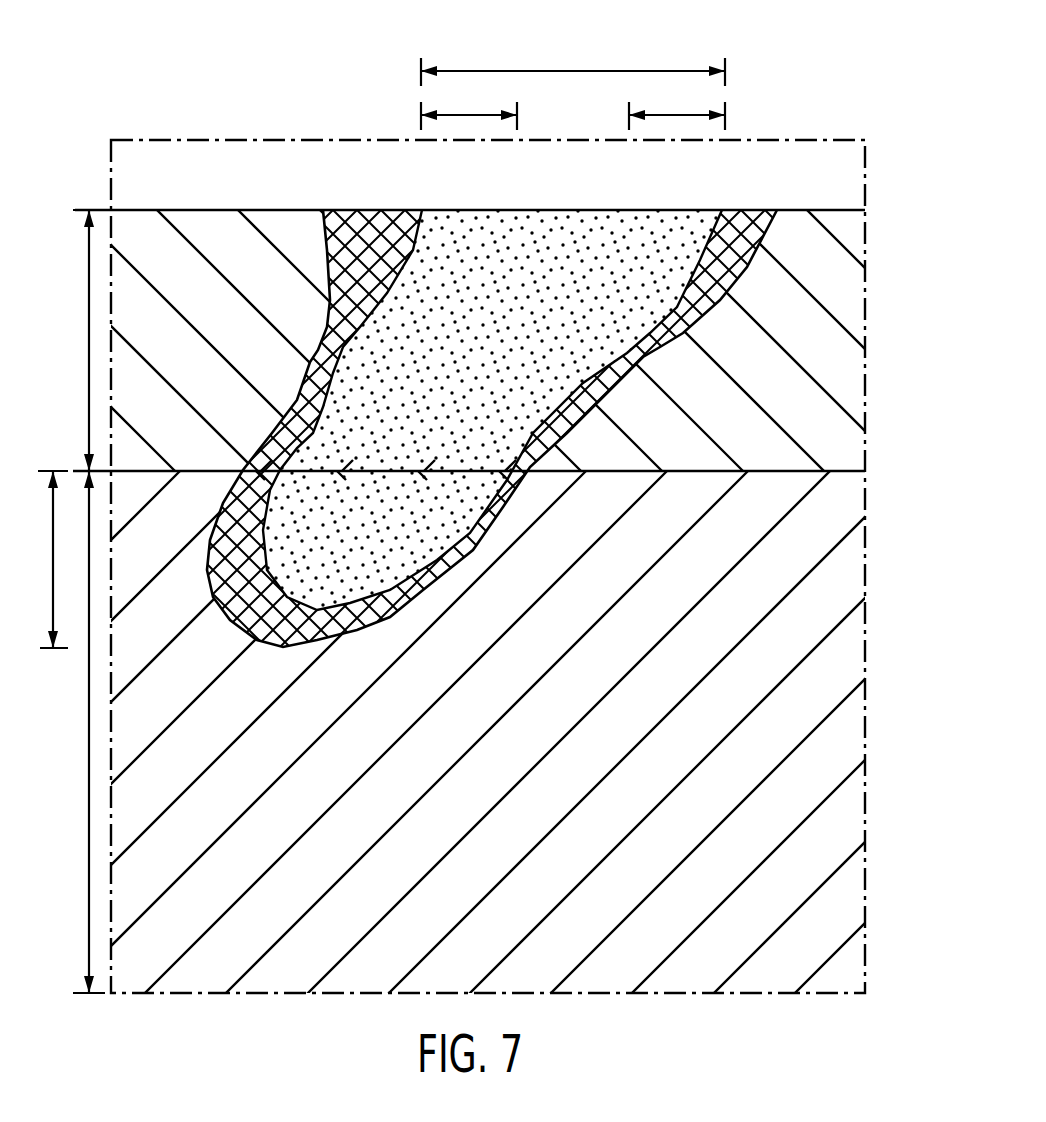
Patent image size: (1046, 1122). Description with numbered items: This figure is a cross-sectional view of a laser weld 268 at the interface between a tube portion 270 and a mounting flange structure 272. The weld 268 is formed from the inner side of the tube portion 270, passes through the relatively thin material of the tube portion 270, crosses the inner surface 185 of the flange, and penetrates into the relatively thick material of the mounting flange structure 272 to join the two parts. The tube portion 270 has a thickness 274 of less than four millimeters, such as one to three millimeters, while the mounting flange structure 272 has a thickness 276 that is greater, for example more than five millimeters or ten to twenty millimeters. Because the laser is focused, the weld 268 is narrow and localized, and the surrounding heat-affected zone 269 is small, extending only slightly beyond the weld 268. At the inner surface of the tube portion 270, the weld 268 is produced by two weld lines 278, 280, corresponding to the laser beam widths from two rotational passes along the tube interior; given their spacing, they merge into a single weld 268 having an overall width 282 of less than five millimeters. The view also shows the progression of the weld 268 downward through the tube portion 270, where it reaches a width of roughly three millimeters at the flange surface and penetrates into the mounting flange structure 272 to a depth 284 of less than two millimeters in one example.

The inner surface 185 is at (847, 468).
The weld 268 is at (482, 375).
The heat-affected zone 269 is at (222, 600).
The tube portion 270 is at (858, 372).
The mounting flange structure 272 is at (857, 720).
The thickness 274 is at (89, 340).
The thickness 276 is at (89, 763).
The weld line 278 is at (455, 115).
The weld line 280 is at (662, 115).
The overall width 282 is at (590, 71).
The depth 284 is at (53, 507).